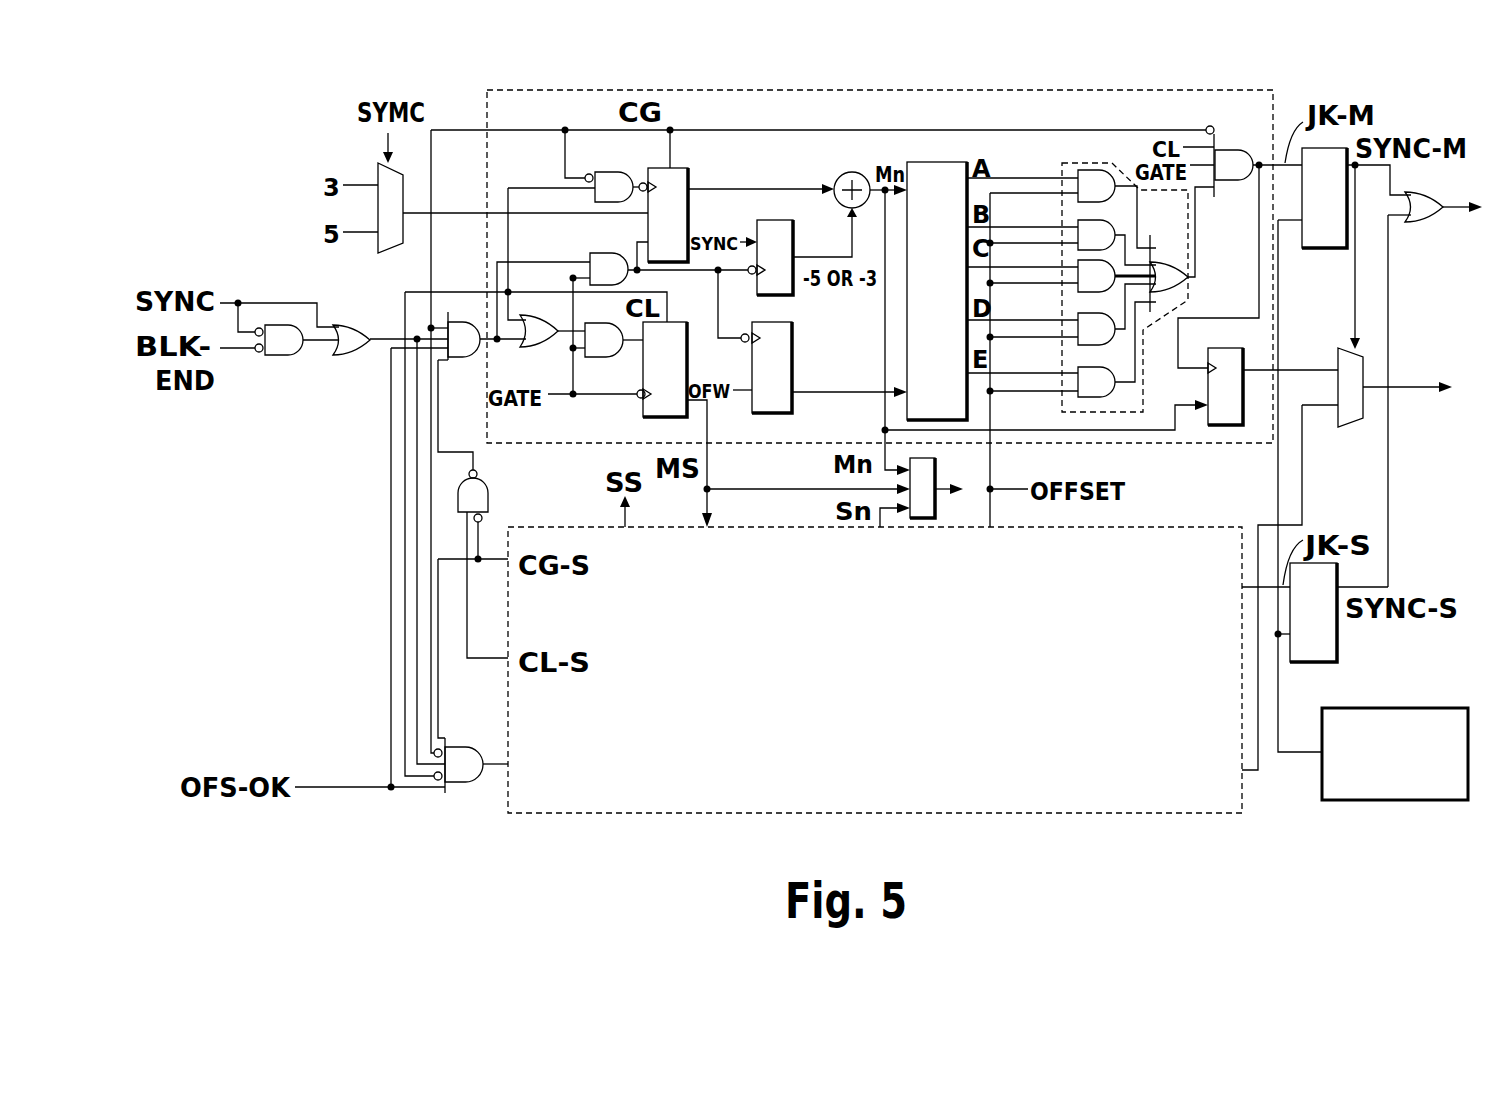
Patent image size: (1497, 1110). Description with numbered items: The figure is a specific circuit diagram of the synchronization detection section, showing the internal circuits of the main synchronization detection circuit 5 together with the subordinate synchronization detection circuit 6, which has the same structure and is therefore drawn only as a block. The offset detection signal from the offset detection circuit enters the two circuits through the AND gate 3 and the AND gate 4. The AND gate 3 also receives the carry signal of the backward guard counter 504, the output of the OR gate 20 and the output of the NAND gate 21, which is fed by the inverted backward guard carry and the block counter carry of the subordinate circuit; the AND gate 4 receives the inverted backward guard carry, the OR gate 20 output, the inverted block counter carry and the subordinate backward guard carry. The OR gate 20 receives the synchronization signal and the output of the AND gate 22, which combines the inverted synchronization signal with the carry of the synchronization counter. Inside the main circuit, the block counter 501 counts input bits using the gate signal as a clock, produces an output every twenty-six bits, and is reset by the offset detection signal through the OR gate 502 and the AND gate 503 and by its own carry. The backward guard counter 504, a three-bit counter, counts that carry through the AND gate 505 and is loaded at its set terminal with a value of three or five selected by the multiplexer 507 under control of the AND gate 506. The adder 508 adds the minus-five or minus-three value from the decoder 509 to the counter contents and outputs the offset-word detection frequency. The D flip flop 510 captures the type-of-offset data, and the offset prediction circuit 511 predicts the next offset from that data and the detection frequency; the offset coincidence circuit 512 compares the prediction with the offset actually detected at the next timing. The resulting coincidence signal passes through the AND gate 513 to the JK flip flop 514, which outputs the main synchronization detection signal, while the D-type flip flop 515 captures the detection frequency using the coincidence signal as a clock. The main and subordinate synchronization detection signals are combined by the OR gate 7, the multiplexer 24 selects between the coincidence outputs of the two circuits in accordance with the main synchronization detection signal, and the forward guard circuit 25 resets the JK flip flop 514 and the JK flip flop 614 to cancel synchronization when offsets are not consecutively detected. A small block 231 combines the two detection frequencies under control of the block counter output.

The AND gate 3 is at (462, 347).
The AND gate 4 is at (460, 780).
The main synchronization detection circuit 5 is at (1235, 88).
The subordinate synchronization detection circuit 6 is at (1182, 527).
The OR gate 7 is at (1422, 197).
The OR gate 20 is at (352, 357).
The NAND gate 21 is at (488, 495).
The AND gate 22 is at (282, 357).
The multiplexer 24 is at (1348, 427).
The forward guard circuit 25 is at (1433, 708).
The comparator 231 is at (928, 468).
The block counter 501 is at (687, 355).
The OR gate 502 is at (538, 343).
The AND gate 503 is at (604, 352).
The backward guard counter 504 is at (678, 168).
The AND gate 505 is at (607, 174).
The AND gate 506 is at (598, 259).
The multiplexer 507 is at (386, 253).
The adder 508 is at (840, 172).
The decoder 509 is at (793, 290).
The D flip flop 510 is at (793, 342).
The offset prediction circuit 511 is at (950, 162).
The offset coincidence circuit 512 is at (1085, 163).
The AND gate 513 is at (1228, 180).
The JK flip flop 514 is at (1318, 240).
The D-type flip flop 515 is at (1218, 348).
The JK flip flop 614 is at (1305, 662).